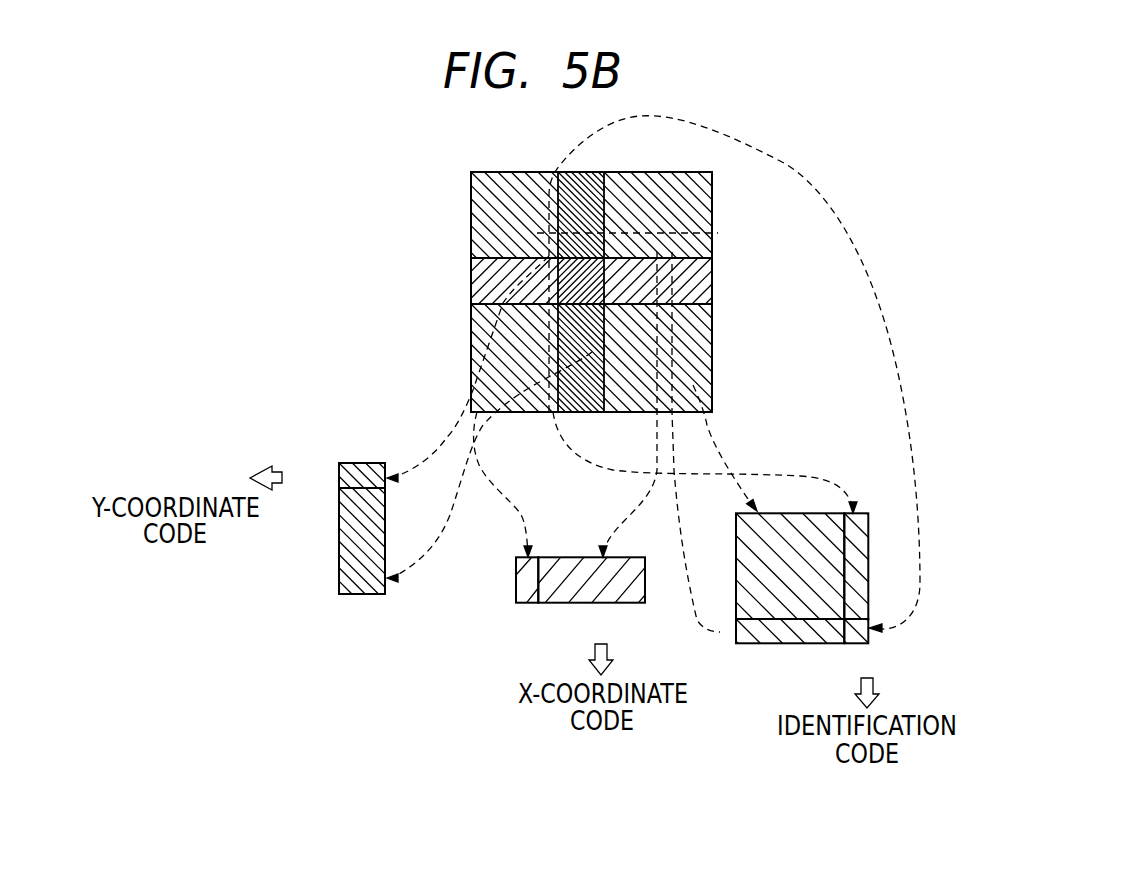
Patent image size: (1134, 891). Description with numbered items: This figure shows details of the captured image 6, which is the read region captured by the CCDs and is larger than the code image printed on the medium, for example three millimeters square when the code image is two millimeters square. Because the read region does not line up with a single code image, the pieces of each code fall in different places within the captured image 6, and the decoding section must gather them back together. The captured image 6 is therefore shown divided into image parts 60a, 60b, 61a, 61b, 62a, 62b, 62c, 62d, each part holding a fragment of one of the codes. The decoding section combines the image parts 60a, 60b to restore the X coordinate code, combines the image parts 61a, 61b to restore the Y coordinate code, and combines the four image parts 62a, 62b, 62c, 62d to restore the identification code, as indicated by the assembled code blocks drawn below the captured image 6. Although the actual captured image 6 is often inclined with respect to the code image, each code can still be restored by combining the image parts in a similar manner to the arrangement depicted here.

The captured image 6 is at (497, 172).
The image part 60a is at (545, 287).
The image part 60b is at (695, 279).
The image part 61a is at (578, 240).
The image part 61b is at (352, 540).
The image part 62a is at (695, 369).
The image part 62b is at (546, 405).
The image part 62c is at (700, 247).
The image part 62d is at (548, 242).